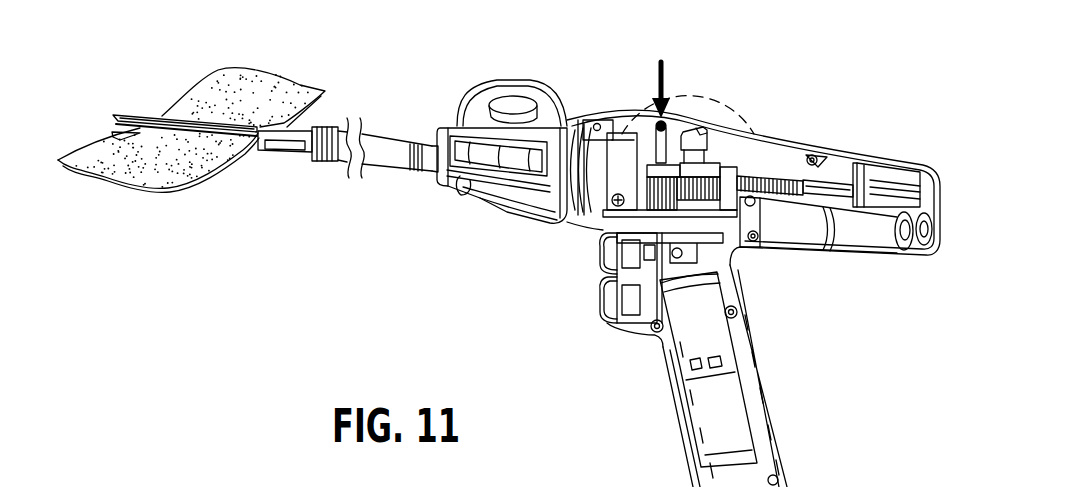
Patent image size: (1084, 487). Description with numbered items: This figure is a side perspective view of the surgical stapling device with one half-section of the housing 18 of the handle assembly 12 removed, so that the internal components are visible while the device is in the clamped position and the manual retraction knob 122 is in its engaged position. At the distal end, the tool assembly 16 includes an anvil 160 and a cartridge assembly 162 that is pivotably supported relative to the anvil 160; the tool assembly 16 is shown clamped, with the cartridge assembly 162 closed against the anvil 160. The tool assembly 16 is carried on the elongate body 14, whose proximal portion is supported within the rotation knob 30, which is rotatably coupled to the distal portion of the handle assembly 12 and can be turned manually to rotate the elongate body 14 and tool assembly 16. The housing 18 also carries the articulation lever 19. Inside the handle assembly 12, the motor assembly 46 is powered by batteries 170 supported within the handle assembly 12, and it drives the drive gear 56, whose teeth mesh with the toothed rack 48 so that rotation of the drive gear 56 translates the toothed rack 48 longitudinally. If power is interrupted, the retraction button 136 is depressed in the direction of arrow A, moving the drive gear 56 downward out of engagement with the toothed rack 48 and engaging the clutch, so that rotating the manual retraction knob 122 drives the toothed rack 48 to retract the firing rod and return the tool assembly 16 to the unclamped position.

The tool assembly 16 is at (144, 90).
The anvil 160 is at (178, 116).
The cartridge assembly 162 is at (250, 152).
The elongate body 14 is at (387, 135).
The articulation lever 19 is at (502, 90).
The rotation knob 30 is at (496, 193).
The handle assembly 12 is at (752, 129).
The housing 18 is at (871, 160).
The retraction button 136 is at (627, 153).
The manual retraction knob 122 is at (706, 120).
The arrow A is at (664, 72).
The toothed rack 48 is at (778, 205).
The batteries 170 is at (848, 238).
The drive gear 56 is at (600, 236).
The motor assembly 46 is at (690, 397).